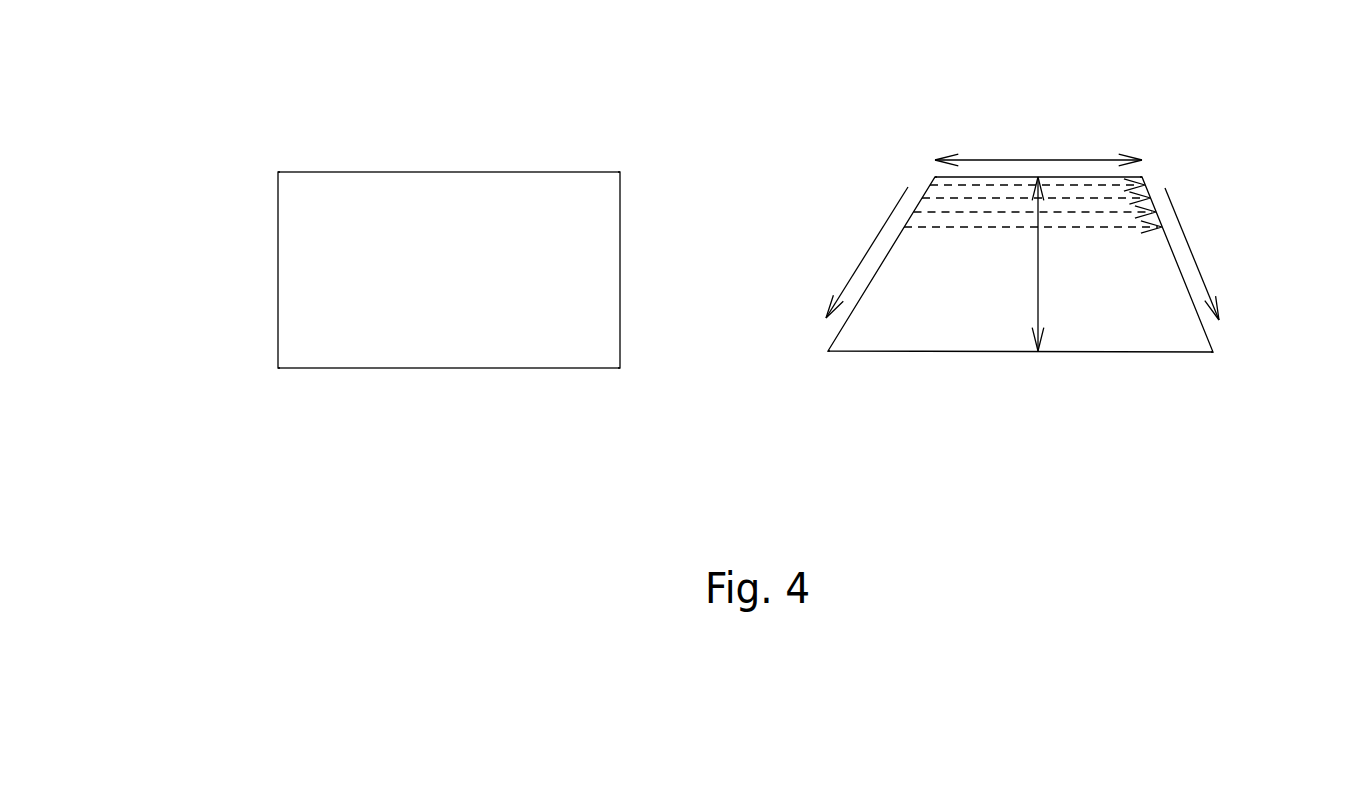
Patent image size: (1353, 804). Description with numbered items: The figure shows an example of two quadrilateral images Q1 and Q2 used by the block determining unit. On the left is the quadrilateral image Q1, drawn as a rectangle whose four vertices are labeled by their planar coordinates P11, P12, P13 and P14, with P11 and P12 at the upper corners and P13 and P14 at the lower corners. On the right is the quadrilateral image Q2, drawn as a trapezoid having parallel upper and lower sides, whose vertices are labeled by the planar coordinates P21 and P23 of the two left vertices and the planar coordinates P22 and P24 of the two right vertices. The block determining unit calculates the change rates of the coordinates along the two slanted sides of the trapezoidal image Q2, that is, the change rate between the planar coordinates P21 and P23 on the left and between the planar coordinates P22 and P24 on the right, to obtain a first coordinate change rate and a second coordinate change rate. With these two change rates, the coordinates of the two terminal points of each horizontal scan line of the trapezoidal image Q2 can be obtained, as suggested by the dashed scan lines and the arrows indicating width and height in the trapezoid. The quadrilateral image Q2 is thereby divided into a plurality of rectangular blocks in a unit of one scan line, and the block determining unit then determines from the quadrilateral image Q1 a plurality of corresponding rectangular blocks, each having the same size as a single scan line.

The quadrilateral image Q1 is at (522, 108).
The quadrilateral image Q2 is at (1095, 110).
The planar coordinate P11 is at (268, 157).
The planar coordinate P12 is at (647, 175).
The planar coordinate P13 is at (265, 373).
The planar coordinate P14 is at (645, 363).
The planar coordinate P21 is at (933, 167).
The planar coordinate P22 is at (1148, 170).
The planar coordinate P23 is at (823, 348).
The planar coordinate P24 is at (1222, 355).